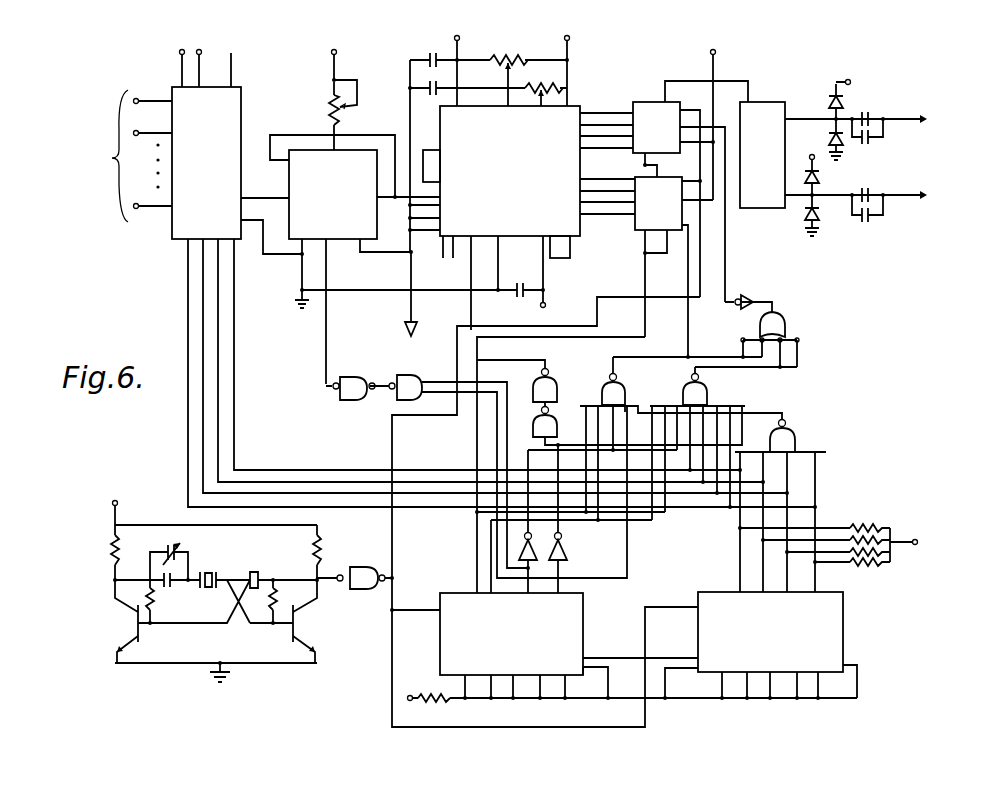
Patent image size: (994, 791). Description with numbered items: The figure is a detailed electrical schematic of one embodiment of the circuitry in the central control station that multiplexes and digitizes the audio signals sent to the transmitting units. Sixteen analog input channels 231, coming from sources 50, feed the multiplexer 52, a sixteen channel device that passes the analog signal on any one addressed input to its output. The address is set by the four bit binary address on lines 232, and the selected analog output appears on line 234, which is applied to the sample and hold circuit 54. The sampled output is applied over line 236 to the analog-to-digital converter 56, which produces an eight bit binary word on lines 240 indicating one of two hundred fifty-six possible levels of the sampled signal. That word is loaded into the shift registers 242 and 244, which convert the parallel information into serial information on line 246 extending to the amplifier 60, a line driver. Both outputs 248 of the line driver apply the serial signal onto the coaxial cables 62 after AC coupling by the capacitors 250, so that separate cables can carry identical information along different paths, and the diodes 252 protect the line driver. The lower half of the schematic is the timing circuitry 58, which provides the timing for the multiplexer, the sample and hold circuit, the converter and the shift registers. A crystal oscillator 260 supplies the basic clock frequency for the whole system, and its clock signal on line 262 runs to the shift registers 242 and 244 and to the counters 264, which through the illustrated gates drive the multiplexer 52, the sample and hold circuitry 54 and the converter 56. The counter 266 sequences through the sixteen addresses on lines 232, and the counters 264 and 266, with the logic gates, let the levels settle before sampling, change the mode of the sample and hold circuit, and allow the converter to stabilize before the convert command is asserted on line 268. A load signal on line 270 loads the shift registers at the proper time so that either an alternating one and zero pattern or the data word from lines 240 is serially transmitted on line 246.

The sources 50 is at (80, 162).
The analog input channels 231 is at (153, 100).
The multiplexer 52 is at (241, 97).
The analog output line 234 is at (268, 190).
The sample and hold circuit 54 is at (363, 148).
The sampled output line 236 is at (410, 206).
The analog-to-digital converter 56 is at (580, 100).
The output lines 240 is at (623, 232).
The shift register 242 is at (647, 100).
The shift register 244 is at (645, 255).
The serial output line 246 is at (742, 80).
The amplifier 60 is at (776, 95).
The outputs 248 is at (808, 117).
The capacitors 250 is at (884, 130).
The diodes 252 is at (830, 122).
The coaxial cables 62 is at (897, 112).
The load signal line 270 is at (727, 240).
The clock signal line 262 is at (700, 310).
The convert command line 268 is at (472, 312).
The address lines 232 is at (214, 297).
The timing circuitry 58 is at (848, 403).
The crystal oscillator 260 is at (178, 680).
The counters 264 is at (583, 620).
The counter 266 is at (843, 632).